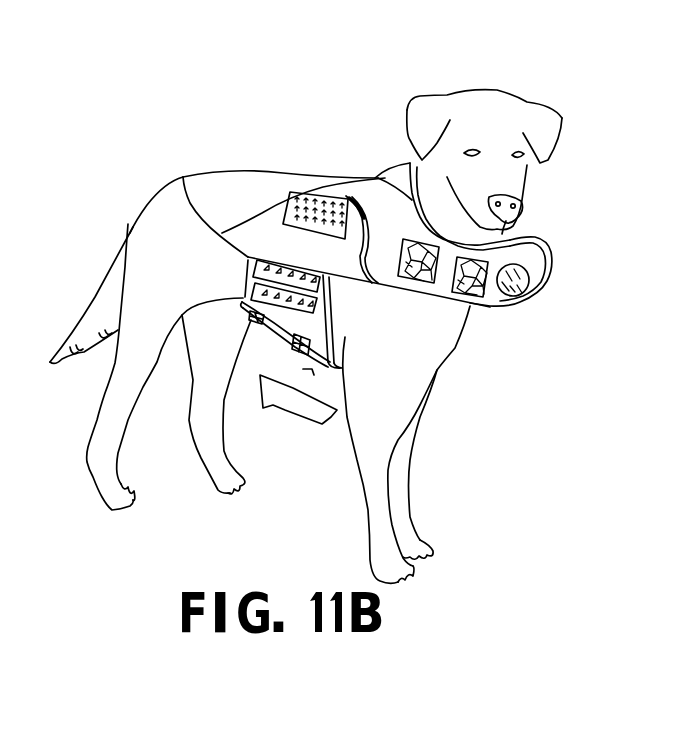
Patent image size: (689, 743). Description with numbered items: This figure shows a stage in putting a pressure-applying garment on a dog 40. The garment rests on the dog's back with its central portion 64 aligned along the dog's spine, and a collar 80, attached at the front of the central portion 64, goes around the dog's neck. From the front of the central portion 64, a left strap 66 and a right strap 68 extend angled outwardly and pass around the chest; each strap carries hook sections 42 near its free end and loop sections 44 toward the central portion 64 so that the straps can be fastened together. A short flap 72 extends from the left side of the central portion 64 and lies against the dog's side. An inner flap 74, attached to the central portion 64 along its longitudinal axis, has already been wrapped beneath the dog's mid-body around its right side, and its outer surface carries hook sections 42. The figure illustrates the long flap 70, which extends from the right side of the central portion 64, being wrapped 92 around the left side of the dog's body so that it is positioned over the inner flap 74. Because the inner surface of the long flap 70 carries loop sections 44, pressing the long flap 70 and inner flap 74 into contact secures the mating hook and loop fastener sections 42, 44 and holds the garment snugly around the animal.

The dog 40 is at (503, 104).
The collar 80 is at (404, 172).
The central portion 64 is at (221, 176).
The short flap 72 is at (284, 204).
The hook sections 42 is at (325, 200).
The left strap 66 is at (551, 252).
The right strap 68 is at (493, 302).
The inner flap 74 is at (331, 303).
The loop sections 44 is at (252, 313).
The long flap 70 is at (304, 371).
The wrapping of the long flap 92 is at (290, 408).